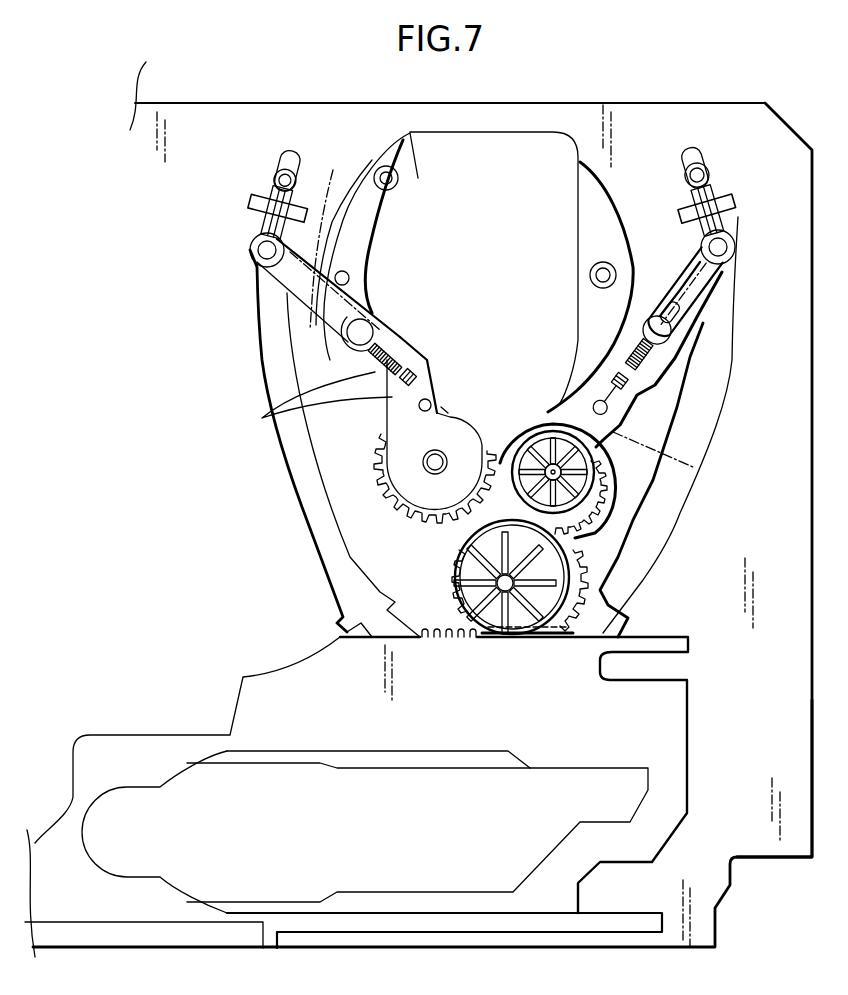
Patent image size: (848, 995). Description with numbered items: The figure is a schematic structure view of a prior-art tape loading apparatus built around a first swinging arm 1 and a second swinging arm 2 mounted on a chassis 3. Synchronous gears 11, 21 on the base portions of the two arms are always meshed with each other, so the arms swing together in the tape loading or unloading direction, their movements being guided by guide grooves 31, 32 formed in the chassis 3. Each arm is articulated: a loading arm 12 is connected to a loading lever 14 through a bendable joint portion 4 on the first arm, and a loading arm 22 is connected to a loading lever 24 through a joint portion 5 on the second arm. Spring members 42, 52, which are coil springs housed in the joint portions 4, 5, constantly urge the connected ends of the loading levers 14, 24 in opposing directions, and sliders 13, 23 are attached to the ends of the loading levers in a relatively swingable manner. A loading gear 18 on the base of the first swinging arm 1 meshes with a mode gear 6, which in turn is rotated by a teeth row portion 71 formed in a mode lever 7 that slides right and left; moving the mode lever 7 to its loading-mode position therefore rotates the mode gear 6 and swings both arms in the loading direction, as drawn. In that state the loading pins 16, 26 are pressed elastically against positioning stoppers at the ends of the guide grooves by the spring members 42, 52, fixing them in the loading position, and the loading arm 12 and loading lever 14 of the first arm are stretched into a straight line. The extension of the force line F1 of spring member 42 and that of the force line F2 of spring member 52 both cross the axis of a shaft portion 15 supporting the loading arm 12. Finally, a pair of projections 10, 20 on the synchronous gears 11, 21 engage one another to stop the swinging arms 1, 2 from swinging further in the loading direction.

The first swinging arm 1 is at (677, 244).
The second swinging arm 2 is at (358, 295).
The chassis 3 is at (767, 840).
The joint portion 4 is at (690, 351).
The joint portion 5 is at (393, 307).
The mode gear 6 is at (464, 618).
The mode lever 7 is at (298, 675).
The projection 10 is at (526, 434).
The synchronous gear 11 is at (620, 538).
The loading arm 12 is at (632, 414).
The slider 13 is at (726, 204).
The loading lever 14 is at (694, 284).
The shaft portion 15 is at (612, 497).
The loading pin 16 is at (700, 170).
The loading gear 18 is at (547, 422).
The projection 20 is at (492, 438).
The synchronous gear 21 is at (411, 515).
The loading arm 22 is at (428, 360).
The slider 23 is at (262, 192).
The loading lever 24 is at (335, 313).
The loading pin 26 is at (284, 174).
The guide groove 31 is at (732, 324).
The guide groove 32 is at (257, 345).
The spring member 42 is at (632, 390).
The spring member 52 is at (262, 418).
The teeth row portion 71 is at (440, 642).
The force line F1 is at (671, 456).
The force line F2 is at (322, 237).